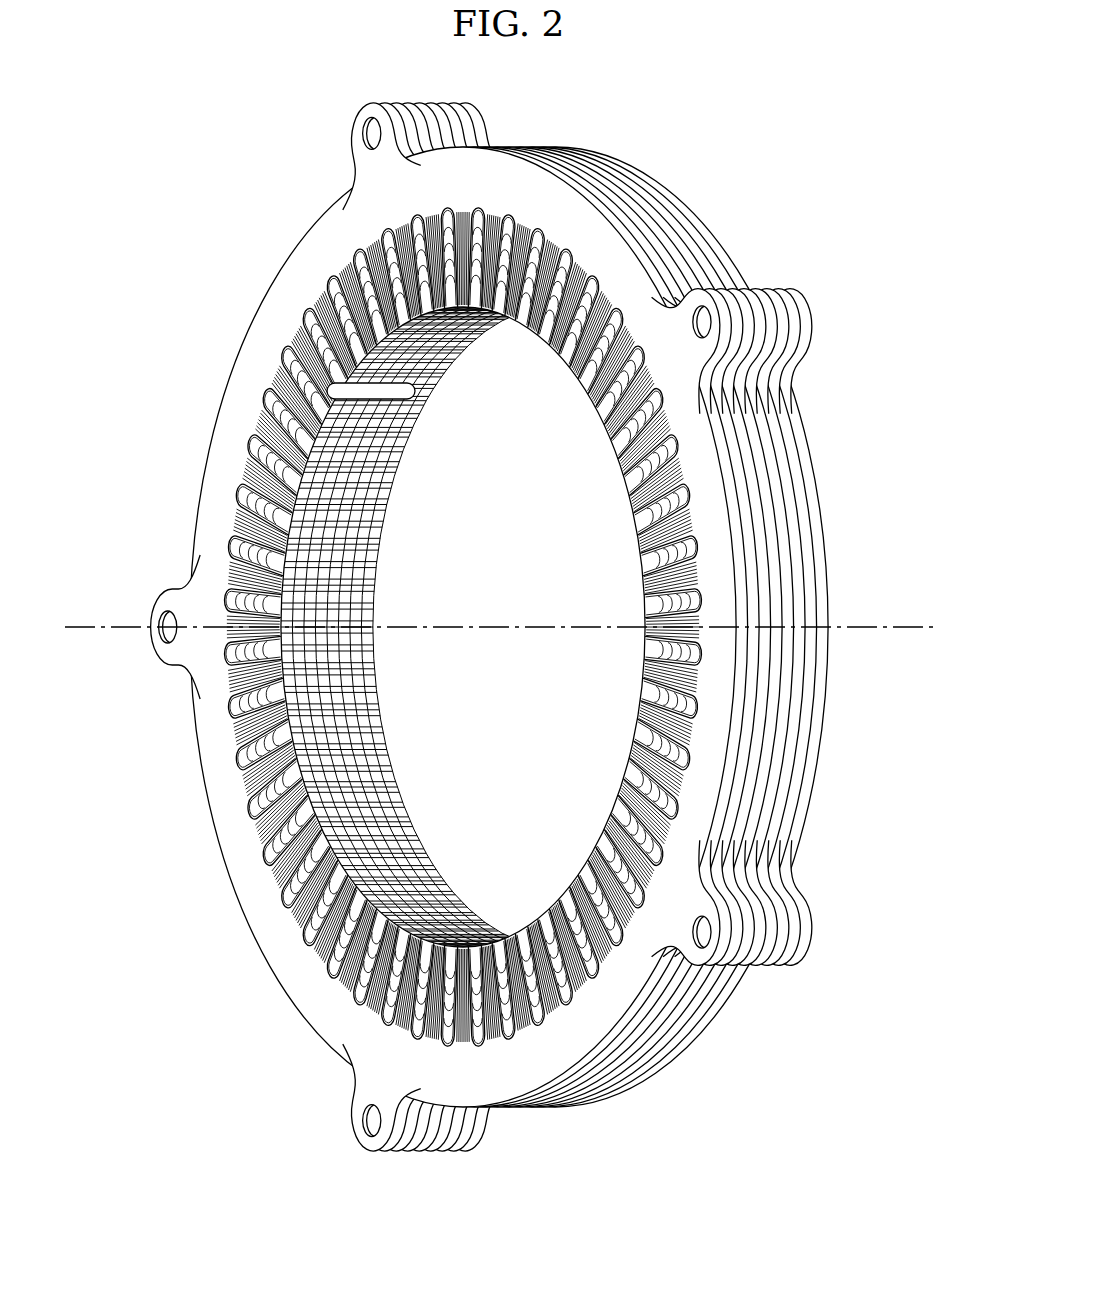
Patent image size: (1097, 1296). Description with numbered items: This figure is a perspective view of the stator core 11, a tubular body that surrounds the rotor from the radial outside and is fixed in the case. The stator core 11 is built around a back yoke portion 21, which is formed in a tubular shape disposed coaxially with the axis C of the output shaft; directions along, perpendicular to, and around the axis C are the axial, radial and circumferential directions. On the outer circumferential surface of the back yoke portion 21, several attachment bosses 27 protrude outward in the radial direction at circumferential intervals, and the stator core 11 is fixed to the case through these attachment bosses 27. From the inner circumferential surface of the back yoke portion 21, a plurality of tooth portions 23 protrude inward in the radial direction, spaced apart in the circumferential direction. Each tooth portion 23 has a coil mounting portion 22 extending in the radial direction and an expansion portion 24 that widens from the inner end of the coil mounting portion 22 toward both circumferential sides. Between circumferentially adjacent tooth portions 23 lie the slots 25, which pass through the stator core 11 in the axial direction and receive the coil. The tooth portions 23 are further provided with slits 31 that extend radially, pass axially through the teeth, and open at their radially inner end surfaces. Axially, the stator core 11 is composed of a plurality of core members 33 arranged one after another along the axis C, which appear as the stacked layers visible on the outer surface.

The stator core 11 is at (500, 616).
The back yoke portion 21 is at (518, 627).
The coil mounting portion 22 is at (283, 352).
The tooth portion 23 is at (405, 430).
The expansion portion 24 is at (420, 393).
The slot 25 is at (270, 405).
The attachment boss 27 is at (832, 300).
The slit 31 is at (255, 500).
The core member 33 is at (748, 468).
The axis C is at (105, 624).